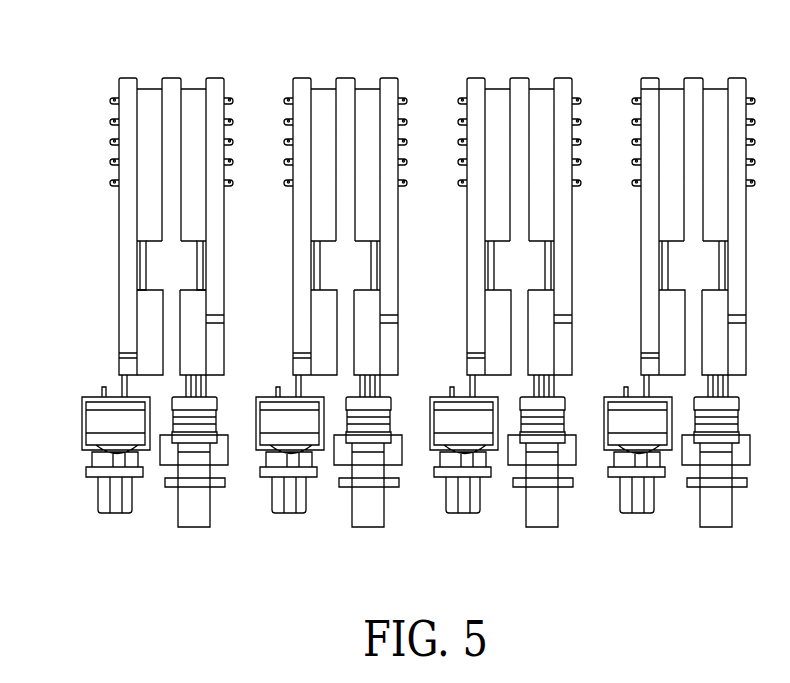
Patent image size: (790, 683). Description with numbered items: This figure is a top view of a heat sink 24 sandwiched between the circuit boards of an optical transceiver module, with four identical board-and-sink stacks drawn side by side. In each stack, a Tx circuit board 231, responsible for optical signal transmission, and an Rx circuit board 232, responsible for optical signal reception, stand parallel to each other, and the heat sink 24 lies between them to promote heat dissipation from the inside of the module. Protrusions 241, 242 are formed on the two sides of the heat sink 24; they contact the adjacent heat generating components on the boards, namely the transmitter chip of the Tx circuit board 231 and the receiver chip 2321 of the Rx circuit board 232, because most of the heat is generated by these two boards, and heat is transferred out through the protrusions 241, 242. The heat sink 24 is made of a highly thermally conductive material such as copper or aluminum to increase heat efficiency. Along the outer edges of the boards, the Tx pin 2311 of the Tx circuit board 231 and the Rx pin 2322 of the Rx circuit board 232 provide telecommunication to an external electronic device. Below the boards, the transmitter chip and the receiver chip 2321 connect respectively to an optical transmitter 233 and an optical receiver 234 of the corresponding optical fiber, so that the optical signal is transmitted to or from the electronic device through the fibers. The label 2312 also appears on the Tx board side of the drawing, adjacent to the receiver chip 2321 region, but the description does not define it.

The Rx circuit board 232 is at (128, 88).
The heat sink 24 is at (167, 94).
The Tx circuit board 231 is at (213, 92).
The Tx pin 2311 is at (233, 99).
The Rx pin 2322 is at (110, 100).
The protrusion 241 is at (152, 245).
The protrusion 242 is at (188, 247).
The receiver chip 2321 is at (145, 268).
The first recess 2312 is at (200, 268).
The optical receiver 234 is at (102, 421).
The optical transmitter 233 is at (227, 458).